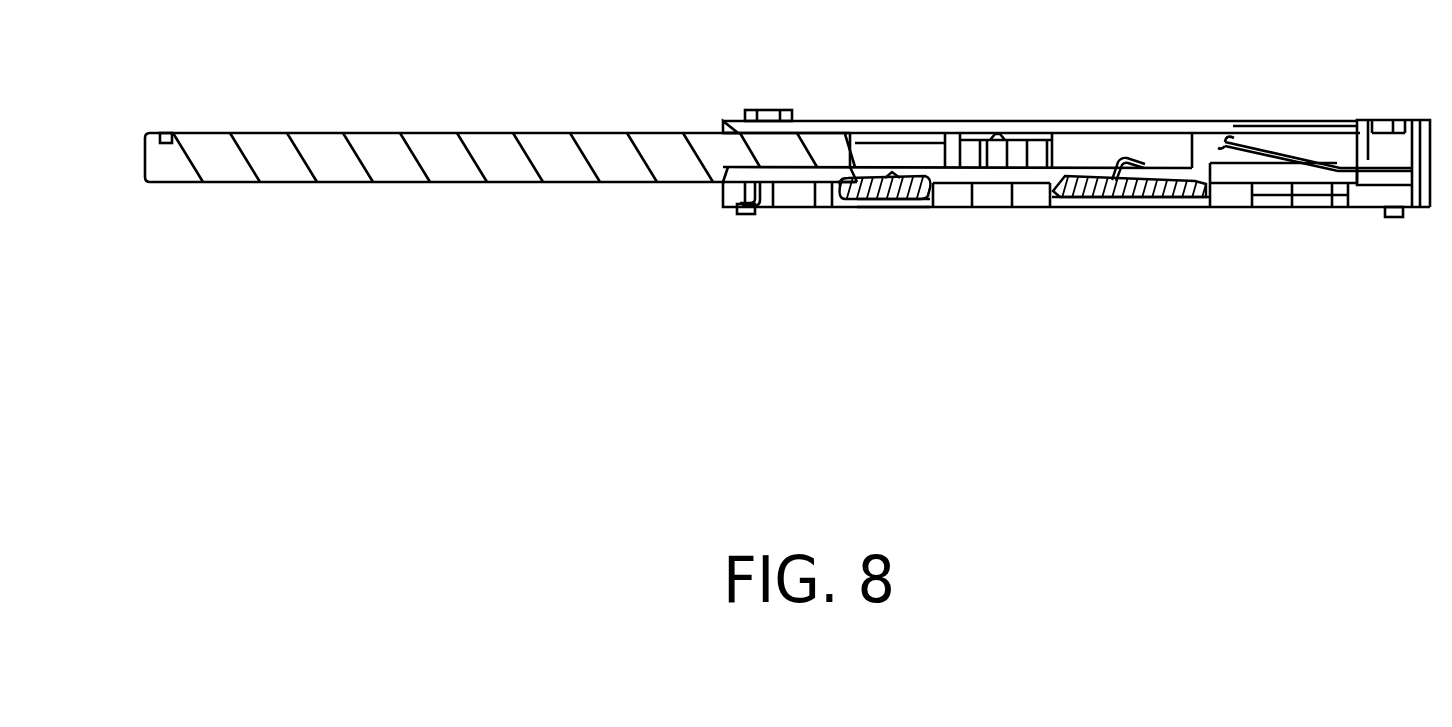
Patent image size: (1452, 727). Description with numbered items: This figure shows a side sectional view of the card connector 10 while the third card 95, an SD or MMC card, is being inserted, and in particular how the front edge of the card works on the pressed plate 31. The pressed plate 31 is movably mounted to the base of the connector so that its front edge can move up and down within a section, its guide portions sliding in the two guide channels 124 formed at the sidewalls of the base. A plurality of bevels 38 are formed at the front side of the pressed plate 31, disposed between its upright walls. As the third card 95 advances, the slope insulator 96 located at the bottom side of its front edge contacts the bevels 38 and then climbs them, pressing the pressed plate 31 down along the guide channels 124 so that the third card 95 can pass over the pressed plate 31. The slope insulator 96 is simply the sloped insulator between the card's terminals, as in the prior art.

The card connector 10 is at (1076, 198).
The pressed plate 31 is at (910, 205).
The bevels 38 is at (868, 208).
The third card 95 is at (308, 132).
The slope insulator 96 is at (848, 178).
The guide channels 124 is at (880, 207).